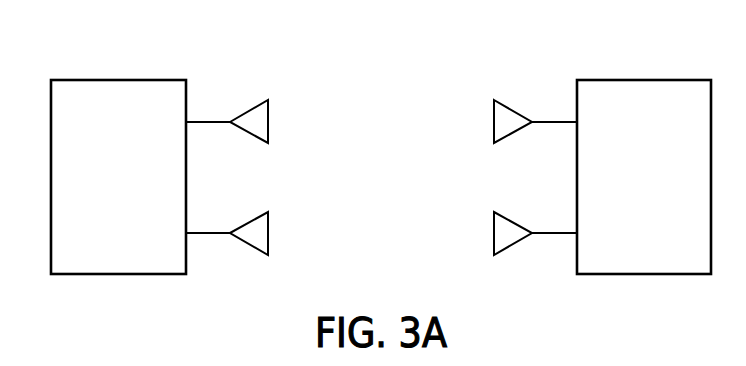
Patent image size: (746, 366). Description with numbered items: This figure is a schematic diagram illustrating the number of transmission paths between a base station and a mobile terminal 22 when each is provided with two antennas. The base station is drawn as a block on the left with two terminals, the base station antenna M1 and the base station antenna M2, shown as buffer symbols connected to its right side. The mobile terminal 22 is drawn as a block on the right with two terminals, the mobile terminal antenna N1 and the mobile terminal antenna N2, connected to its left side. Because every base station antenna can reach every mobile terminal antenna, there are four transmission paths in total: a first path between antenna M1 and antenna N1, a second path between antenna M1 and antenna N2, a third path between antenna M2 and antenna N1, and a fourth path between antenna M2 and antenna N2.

The mobile terminal 22 is at (685, 80).
The base station antenna M1 is at (268, 112).
The base station antenna M2 is at (268, 223).
The mobile terminal antenna N1 is at (494, 112).
The mobile terminal antenna N2 is at (494, 223).